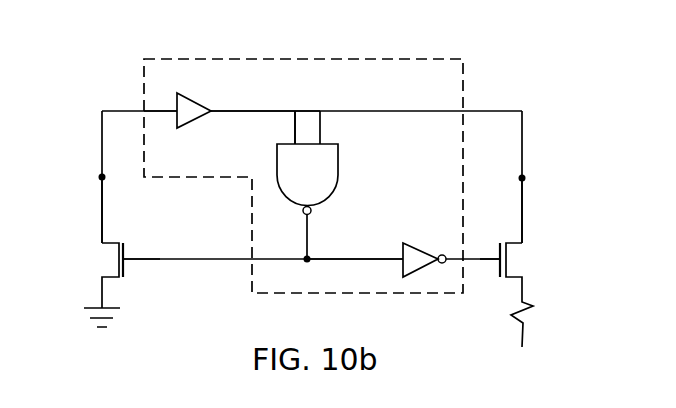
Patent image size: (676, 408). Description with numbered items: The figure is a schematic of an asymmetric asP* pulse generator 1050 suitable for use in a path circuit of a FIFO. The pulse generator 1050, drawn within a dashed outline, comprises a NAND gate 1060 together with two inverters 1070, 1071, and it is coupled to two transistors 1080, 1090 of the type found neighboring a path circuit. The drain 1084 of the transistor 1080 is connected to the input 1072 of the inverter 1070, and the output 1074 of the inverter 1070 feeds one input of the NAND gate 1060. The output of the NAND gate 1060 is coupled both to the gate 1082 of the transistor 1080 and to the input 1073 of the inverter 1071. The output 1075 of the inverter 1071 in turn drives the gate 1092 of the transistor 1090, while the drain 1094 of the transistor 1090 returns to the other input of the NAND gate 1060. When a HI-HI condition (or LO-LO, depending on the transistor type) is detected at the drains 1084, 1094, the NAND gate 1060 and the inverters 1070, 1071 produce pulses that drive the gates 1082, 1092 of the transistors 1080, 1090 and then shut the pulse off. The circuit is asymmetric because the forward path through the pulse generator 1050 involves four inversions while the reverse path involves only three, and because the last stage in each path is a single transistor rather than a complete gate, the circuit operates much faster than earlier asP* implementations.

The pulse generator 1050 is at (433, 59).
The NAND gate 1060 is at (333, 184).
The inverter 1070 is at (186, 94).
The inverter 1071 is at (416, 243).
The input of inverter 1070 1072 is at (157, 112).
The input of inverter 1071 1073 is at (349, 258).
The output of inverter 1070 1074 is at (281, 110).
The output of inverter 1071 1075 is at (478, 258).
The transistor 1080 is at (114, 243).
The gate of transistor 1080 1082 is at (123, 270).
The drain of transistor 1080 1084 is at (102, 211).
The transistor 1090 is at (514, 247).
The gate of transistor 1090 1092 is at (499, 268).
The drain of transistor 1090 1094 is at (523, 213).